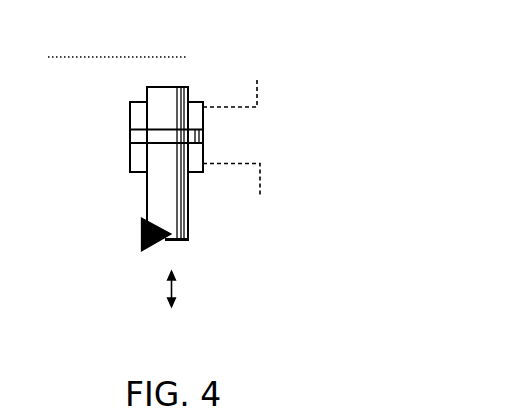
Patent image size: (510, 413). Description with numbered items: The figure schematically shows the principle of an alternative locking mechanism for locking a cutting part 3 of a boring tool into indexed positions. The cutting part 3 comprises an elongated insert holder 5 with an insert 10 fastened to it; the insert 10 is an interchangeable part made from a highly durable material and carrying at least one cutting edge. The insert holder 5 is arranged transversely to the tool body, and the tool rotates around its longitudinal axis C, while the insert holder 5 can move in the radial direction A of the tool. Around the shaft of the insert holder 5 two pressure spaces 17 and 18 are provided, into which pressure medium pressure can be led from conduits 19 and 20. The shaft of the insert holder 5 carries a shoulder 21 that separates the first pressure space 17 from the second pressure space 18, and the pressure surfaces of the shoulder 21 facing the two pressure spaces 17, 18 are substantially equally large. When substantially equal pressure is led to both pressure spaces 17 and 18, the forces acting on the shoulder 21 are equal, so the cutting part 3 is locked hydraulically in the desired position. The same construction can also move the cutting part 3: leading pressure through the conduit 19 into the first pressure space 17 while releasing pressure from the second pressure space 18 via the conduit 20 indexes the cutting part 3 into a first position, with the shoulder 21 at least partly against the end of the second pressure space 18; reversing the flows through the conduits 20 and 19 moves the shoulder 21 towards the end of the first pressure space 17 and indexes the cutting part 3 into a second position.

The cutting part 3 is at (106, 222).
The insert holder 5 is at (178, 216).
The insert 10 is at (141, 241).
The first pressure space 17 is at (138, 113).
The second pressure space 18 is at (138, 160).
The conduit 19 is at (257, 98).
The pressure conduit 20 is at (260, 172).
The shoulder 21 is at (143, 137).
The longitudinal axis C is at (83, 56).
The radial direction A is at (186, 290).